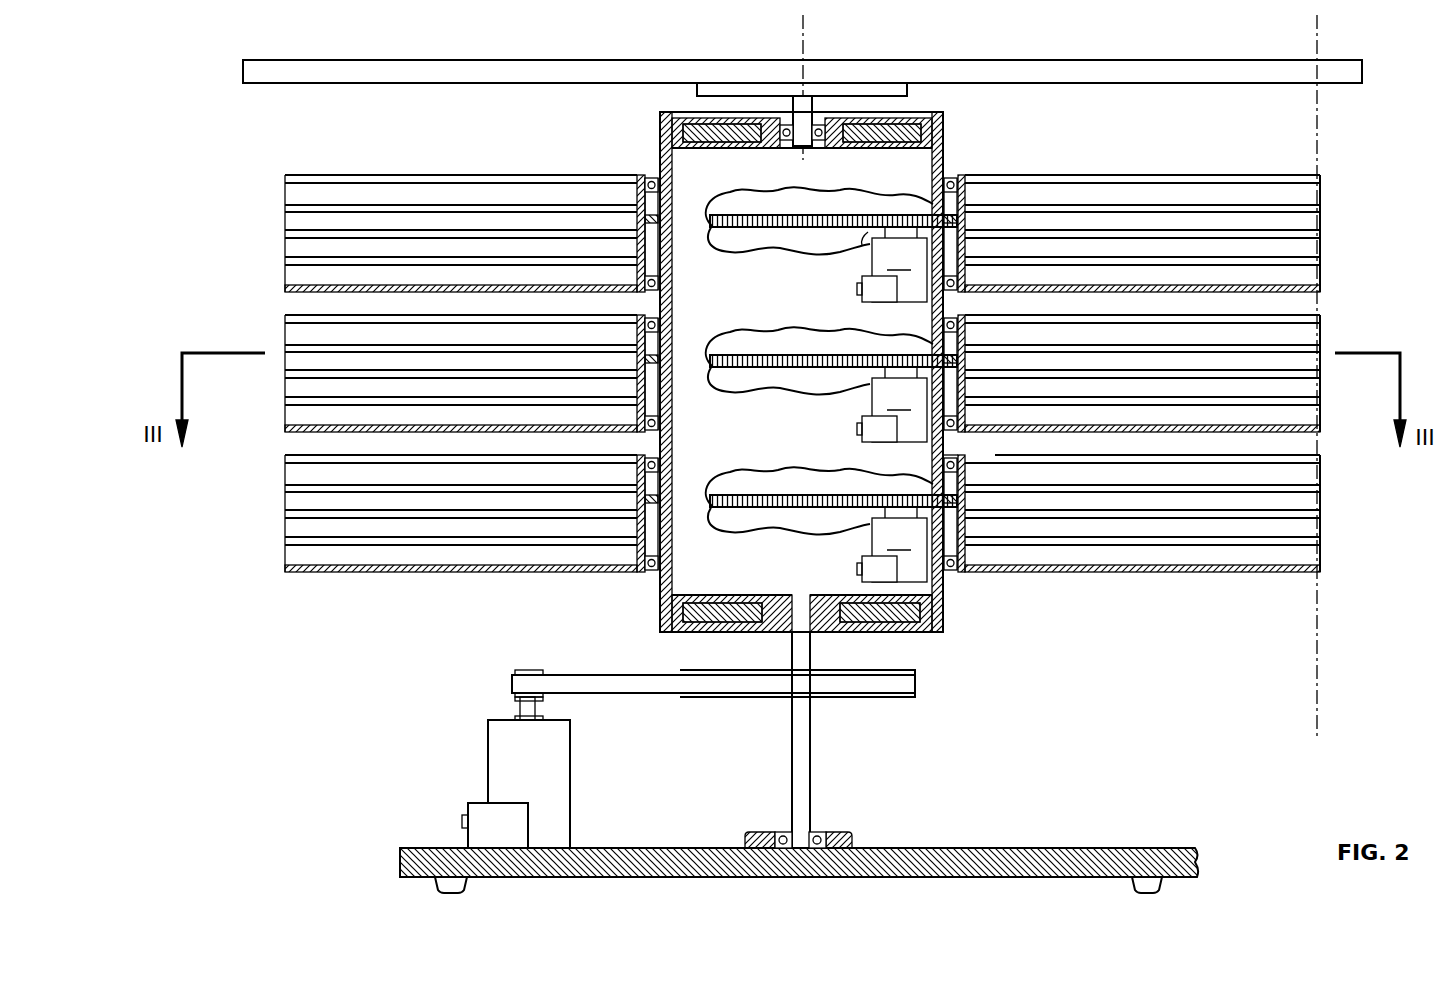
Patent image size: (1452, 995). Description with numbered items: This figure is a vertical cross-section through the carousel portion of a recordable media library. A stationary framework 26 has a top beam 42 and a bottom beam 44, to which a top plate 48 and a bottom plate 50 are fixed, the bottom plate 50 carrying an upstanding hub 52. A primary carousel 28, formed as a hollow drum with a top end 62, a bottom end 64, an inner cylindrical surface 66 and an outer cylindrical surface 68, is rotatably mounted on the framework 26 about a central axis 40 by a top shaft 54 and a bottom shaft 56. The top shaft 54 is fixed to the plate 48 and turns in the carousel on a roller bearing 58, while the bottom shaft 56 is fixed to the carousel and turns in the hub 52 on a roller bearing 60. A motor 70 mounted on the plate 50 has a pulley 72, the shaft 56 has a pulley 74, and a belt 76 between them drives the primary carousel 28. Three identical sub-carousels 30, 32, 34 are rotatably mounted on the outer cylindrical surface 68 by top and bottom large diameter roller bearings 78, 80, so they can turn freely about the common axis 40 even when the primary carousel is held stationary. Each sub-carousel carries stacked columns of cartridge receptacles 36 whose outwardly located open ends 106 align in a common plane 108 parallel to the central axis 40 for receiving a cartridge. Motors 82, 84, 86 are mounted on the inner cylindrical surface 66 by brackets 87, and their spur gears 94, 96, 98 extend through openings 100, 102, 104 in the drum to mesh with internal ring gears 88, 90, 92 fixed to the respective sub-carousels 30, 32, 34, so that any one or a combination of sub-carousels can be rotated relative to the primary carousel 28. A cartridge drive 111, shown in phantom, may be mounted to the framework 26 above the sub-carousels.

The framework 26 is at (1168, 886).
The primary carousel 28 is at (660, 612).
The sub-carousel 30 is at (1326, 535).
The sub-carousel 32 is at (1326, 330).
The sub-carousel 34 is at (1326, 270).
The cartridge receptacles 36 is at (292, 247).
The central axis 40 is at (803, 30).
The top beam 42 is at (243, 71).
The bottom beam 44 is at (435, 885).
The top plate 48 is at (888, 92).
The bottom plate 50 is at (1125, 848).
The hub 52 is at (843, 833).
The top shaft 54 is at (793, 108).
The bottom shaft 56 is at (792, 748).
The roller bearing 58 is at (818, 125).
The roller bearing 60 is at (780, 833).
The top end 62 is at (935, 124).
The bottom end 64 is at (700, 595).
The inner cylindrical surface 66 is at (935, 170).
The outer cylindrical surface 68 is at (945, 136).
The motor 70 is at (492, 752).
The pulley 72 is at (528, 670).
The pulley 74 is at (895, 700).
The belt 76 is at (640, 697).
The roller bearing 78 is at (652, 178).
The roller bearing 80 is at (645, 265).
The motor 82 is at (899, 544).
The motor 84 is at (899, 404).
The motor 86 is at (899, 264).
The brackets 87 is at (895, 302).
The internal ring gear 88 is at (750, 509).
The internal ring gear 90 is at (750, 369).
The internal ring gear 92 is at (750, 229).
The spur gear 94 is at (866, 510).
The spur gear 96 is at (868, 370).
The spur gear 98 is at (866, 230).
The opening 100 is at (940, 510).
The opening 102 is at (952, 350).
The opening 104 is at (968, 205).
The open ends 106 is at (287, 500).
The common plane 108 is at (1317, 663).
The cartridge drive 111 is at (1130, 70).